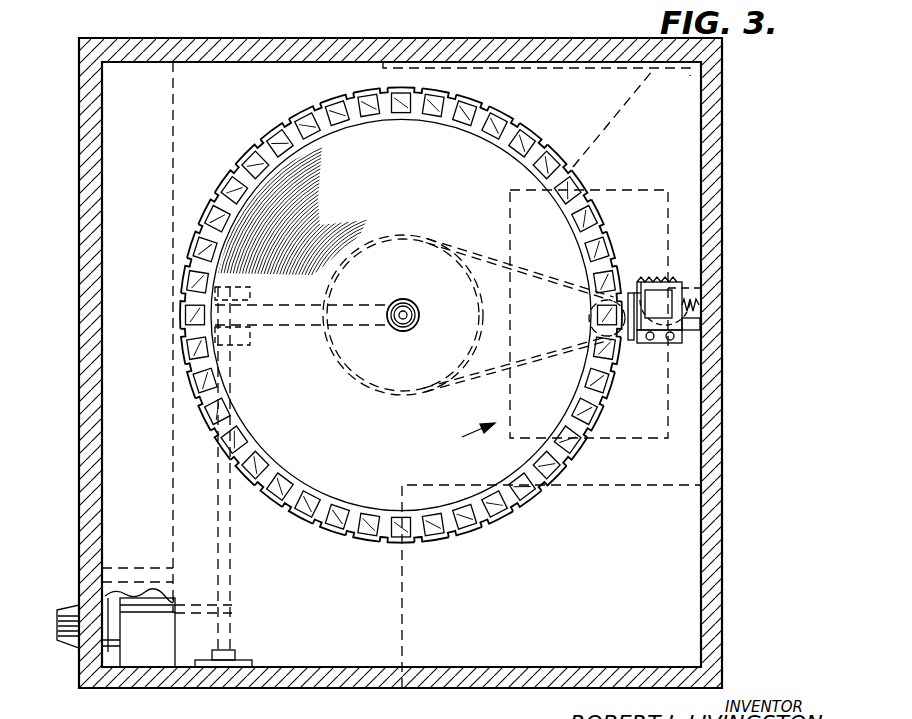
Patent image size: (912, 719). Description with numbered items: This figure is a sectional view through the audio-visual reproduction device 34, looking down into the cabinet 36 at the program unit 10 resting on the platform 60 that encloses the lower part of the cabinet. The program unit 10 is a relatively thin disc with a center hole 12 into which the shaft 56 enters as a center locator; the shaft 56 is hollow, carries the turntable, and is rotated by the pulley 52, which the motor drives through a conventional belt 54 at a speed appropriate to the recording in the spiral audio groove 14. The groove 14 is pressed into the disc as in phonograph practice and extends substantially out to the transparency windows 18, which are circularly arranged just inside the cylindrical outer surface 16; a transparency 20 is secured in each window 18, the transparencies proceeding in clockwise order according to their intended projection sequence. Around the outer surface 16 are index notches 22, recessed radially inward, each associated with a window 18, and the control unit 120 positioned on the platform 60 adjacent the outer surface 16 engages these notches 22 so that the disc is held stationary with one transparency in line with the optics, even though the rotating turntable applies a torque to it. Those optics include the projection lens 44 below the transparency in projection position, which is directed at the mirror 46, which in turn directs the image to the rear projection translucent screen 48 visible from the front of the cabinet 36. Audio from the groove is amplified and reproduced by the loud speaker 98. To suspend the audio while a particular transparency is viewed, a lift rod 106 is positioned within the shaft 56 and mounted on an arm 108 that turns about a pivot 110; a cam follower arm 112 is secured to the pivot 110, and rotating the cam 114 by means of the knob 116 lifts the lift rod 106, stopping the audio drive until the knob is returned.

The program unit 10 is at (562, 147).
The center hole 12 is at (422, 272).
The spiral audio groove 14 is at (298, 186).
The cylindrical outer surface 16 is at (220, 180).
The transparency windows 18 is at (218, 213).
The transparency 20 is at (210, 242).
The index notches 22 is at (213, 432).
The audio-visual reproduction device 34 is at (736, 159).
The cabinet 36 is at (706, 460).
The projection lens 44 is at (590, 318).
The mirror 46 is at (668, 398).
The rear projection translucent screen 48 is at (175, 97).
The pulley 52 is at (405, 232).
The belt 54 is at (490, 250).
The shaft 56 is at (419, 316).
The platform 60 is at (535, 80).
The loud speaker 98 is at (655, 88).
The lift rod 106 is at (400, 320).
The arm 108 is at (297, 328).
The pivot 110 is at (232, 585).
The cam follower arm 112 is at (147, 612).
The cam 114 is at (117, 648).
The knob 116 is at (63, 643).
The control unit 120 is at (653, 268).